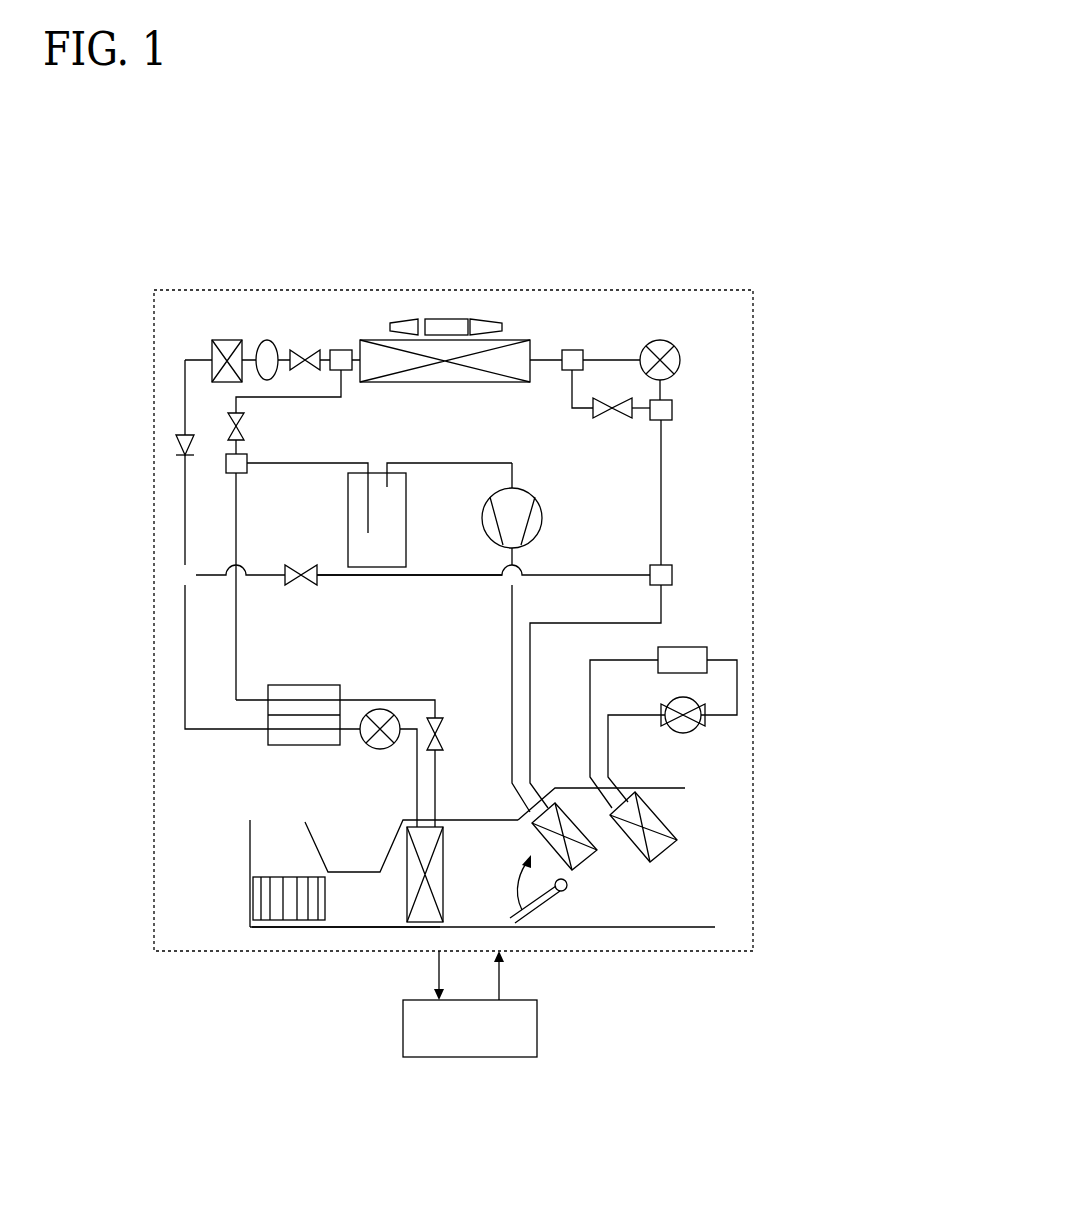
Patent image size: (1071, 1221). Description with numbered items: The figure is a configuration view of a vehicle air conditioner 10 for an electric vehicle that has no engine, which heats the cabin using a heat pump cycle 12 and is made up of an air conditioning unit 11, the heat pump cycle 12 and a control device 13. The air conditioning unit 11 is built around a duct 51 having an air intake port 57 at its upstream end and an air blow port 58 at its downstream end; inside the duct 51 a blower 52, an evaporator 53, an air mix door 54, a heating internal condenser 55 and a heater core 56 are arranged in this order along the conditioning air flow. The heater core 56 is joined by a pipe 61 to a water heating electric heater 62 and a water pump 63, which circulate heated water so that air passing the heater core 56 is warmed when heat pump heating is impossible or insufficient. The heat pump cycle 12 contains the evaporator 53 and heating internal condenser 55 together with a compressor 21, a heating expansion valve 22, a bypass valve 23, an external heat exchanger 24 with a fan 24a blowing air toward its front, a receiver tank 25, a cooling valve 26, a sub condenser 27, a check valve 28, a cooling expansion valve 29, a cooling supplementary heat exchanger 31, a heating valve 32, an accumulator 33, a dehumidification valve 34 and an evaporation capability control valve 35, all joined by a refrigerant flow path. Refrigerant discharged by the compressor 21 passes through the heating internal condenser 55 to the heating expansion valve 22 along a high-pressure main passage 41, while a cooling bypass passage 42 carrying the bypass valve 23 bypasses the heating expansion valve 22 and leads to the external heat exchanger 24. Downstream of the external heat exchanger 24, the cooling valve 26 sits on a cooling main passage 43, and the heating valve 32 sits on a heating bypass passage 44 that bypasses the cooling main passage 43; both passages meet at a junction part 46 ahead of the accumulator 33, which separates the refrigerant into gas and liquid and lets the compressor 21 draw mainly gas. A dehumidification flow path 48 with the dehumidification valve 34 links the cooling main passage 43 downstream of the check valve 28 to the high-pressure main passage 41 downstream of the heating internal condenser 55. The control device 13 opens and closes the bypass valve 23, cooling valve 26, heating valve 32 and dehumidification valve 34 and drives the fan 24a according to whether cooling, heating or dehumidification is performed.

The vehicle air conditioner 10 is at (653, 262).
The air conditioning unit 11 is at (357, 938).
The heat pump cycle 12 is at (708, 523).
The control device 13 is at (538, 1027).
The compressor 21 is at (543, 518).
The heating expansion valve 22 is at (681, 360).
The bypass valve 23 is at (610, 420).
The external heat exchanger 24 is at (485, 383).
The fan 24a is at (483, 318).
The receiver tank 25 is at (268, 340).
The cooling valve 26 is at (305, 350).
The sub condenser 27 is at (227, 340).
The check valve 28 is at (180, 447).
The cooling expansion valve 29 is at (380, 750).
The cooling supplementary heat exchanger 31 is at (268, 742).
The heating valve 32 is at (245, 425).
The accumulator 33 is at (348, 490).
The dehumidification valve 34 is at (297, 566).
The evaporation capability control valve 35 is at (437, 718).
The high-pressure main passage 41 is at (661, 475).
The cooling bypass passage 42 is at (570, 390).
The cooling main passage 43 is at (185, 398).
The heating bypass passage 44 is at (342, 383).
The junction part 46 is at (240, 474).
The dehumidification flow path 48 is at (437, 572).
The duct 51 is at (298, 930).
The blower 52 is at (265, 897).
The evaporator 53 is at (407, 895).
The air mix door 54 is at (553, 903).
The heating internal condenser 55 is at (586, 867).
The heater core 56 is at (670, 855).
The air intake port 57 is at (305, 822).
The air blow port 58 is at (668, 789).
The pipe 61 is at (738, 685).
The water heating electric heater 62 is at (692, 647).
The water pump 63 is at (684, 733).